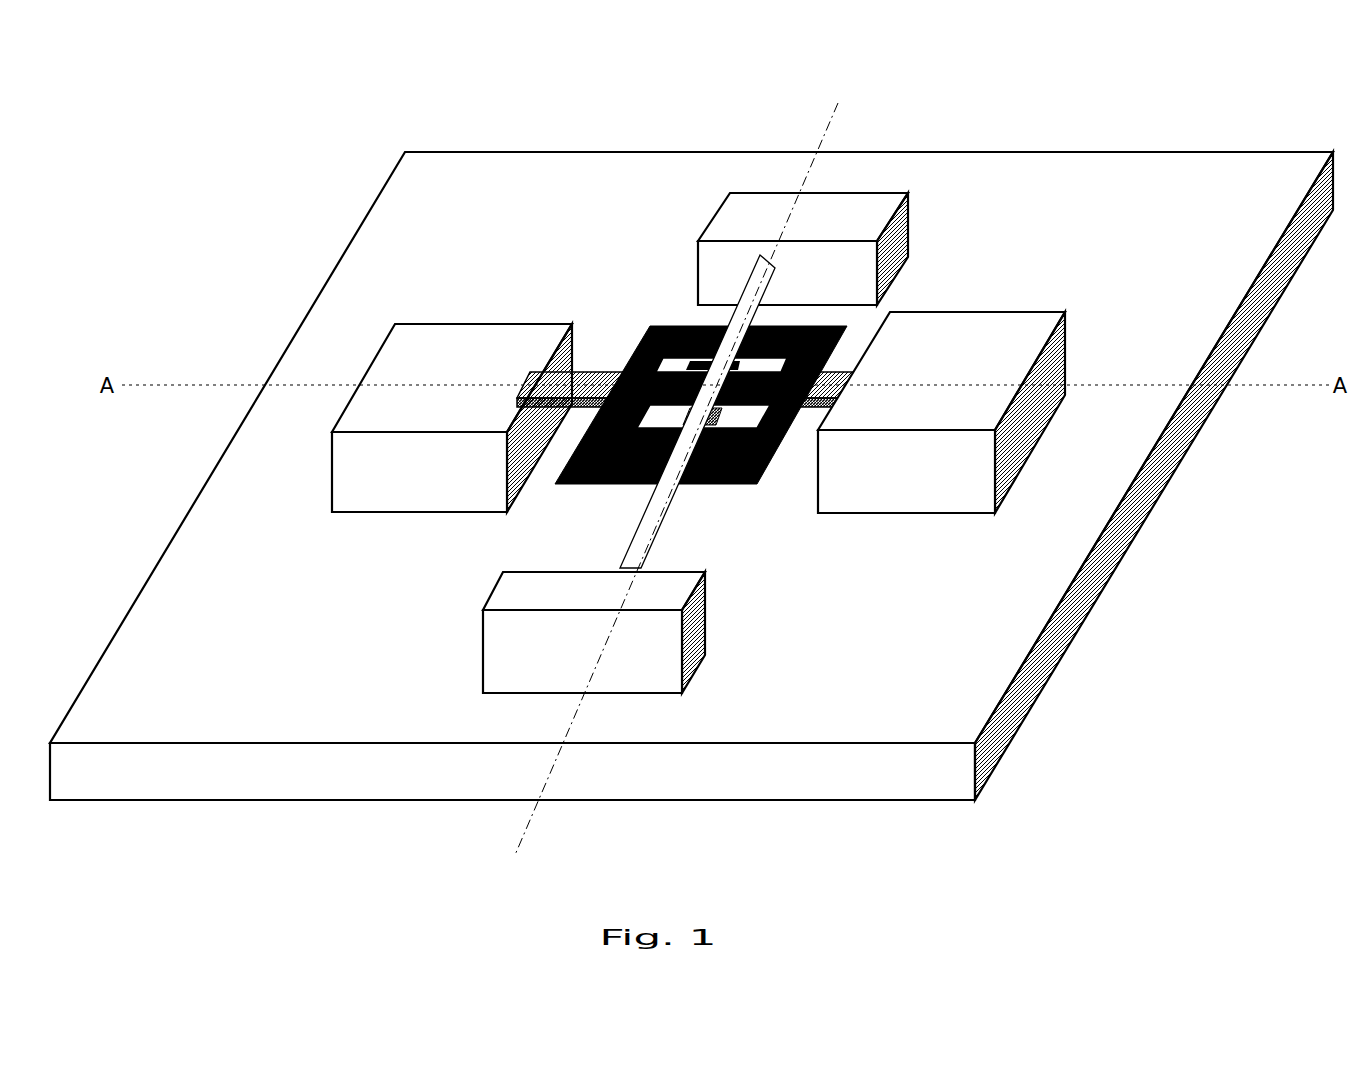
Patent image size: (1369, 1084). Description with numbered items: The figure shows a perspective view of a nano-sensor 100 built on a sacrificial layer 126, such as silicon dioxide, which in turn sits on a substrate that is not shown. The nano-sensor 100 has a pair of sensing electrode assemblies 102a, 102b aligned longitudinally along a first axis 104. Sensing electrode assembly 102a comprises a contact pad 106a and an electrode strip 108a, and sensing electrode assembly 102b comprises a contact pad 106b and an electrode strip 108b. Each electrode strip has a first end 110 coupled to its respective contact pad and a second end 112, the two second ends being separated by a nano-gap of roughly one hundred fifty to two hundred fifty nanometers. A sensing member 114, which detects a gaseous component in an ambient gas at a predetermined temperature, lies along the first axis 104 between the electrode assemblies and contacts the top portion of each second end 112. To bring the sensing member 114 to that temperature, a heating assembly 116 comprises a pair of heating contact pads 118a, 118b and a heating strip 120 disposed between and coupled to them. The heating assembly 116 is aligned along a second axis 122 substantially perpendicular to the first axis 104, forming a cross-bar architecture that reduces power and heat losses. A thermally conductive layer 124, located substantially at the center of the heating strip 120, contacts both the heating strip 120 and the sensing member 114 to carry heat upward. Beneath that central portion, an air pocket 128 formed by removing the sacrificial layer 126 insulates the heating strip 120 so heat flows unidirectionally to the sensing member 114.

The nano-sensor 100 is at (702, 476).
The sensing electrode assembly 102a is at (504, 380).
The sensing electrode assembly 102b is at (952, 371).
The first axis 104 is at (702, 476).
The contact pad 106a is at (452, 418).
The contact pad 106b is at (941, 412).
The electrode strip 108a is at (575, 385).
The electrode strip 108b is at (847, 378).
The first end 110 is at (518, 408).
The second end 112 is at (572, 485).
The sensing member 114 is at (783, 330).
The heating assembly 116 is at (785, 168).
The heating contact pad 118a is at (803, 249).
The heating contact pad 118b is at (594, 632).
The heating strip 120 is at (743, 327).
The second axis 122 is at (838, 103).
The thermally conductive layer 124 is at (705, 485).
The sacrificial layer 126 is at (1080, 553).
The air pocket 128 is at (770, 460).